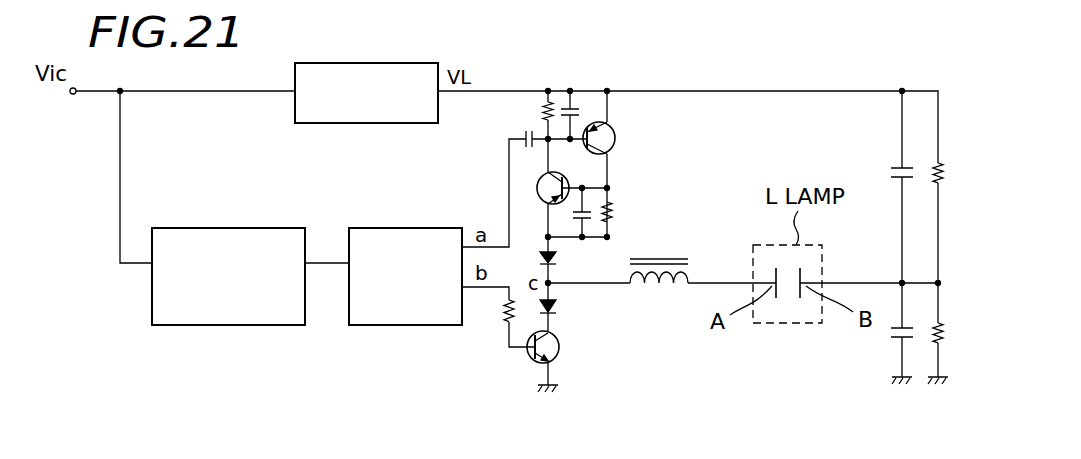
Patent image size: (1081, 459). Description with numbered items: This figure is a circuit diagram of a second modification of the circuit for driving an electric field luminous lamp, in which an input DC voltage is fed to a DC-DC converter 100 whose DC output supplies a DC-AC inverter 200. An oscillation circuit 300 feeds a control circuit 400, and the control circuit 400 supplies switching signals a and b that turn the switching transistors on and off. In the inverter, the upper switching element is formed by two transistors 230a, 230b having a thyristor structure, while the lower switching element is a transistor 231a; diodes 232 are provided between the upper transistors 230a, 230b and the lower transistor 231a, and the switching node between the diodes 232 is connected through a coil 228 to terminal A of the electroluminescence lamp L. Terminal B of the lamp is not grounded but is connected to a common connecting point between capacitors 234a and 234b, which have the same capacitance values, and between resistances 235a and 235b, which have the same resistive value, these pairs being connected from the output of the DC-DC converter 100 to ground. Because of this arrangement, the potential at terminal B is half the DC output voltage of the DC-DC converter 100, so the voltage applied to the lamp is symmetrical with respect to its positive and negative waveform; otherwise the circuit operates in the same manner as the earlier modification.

The DC-DC converter 100 is at (360, 123).
The DC-AC inverter 200 is at (657, 118).
The oscillation circuit 300 is at (230, 325).
The control circuit 400 is at (413, 325).
The coil 228 is at (662, 290).
The transistor 230a is at (615, 145).
The transistor 230b is at (537, 188).
The transistor 231a is at (559, 355).
The diode 232 is at (571, 289).
The capacitor 234a is at (892, 167).
The capacitor 234b is at (892, 340).
The resistance 235a is at (947, 176).
The resistance 235b is at (947, 332).